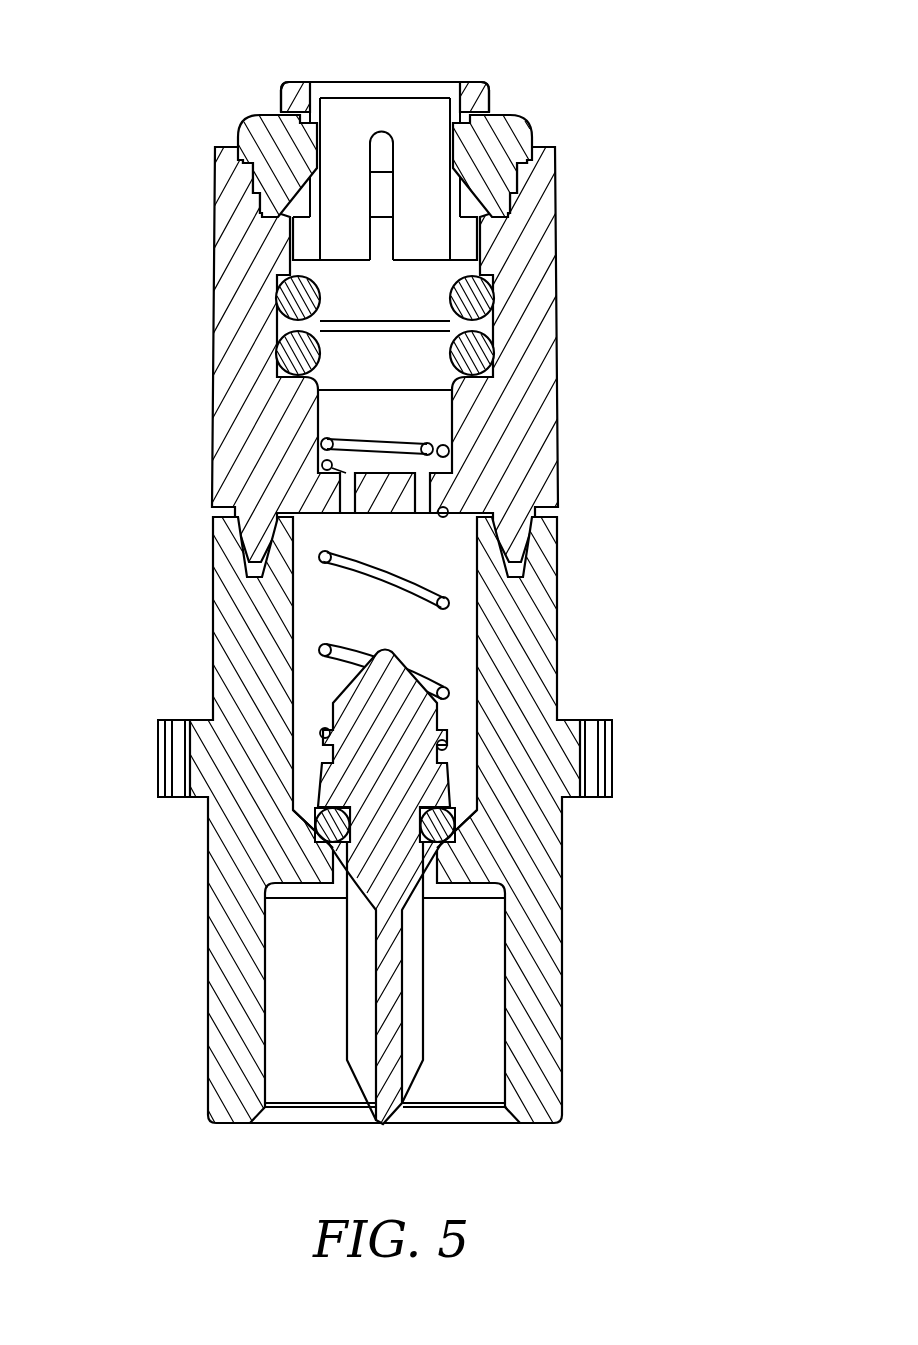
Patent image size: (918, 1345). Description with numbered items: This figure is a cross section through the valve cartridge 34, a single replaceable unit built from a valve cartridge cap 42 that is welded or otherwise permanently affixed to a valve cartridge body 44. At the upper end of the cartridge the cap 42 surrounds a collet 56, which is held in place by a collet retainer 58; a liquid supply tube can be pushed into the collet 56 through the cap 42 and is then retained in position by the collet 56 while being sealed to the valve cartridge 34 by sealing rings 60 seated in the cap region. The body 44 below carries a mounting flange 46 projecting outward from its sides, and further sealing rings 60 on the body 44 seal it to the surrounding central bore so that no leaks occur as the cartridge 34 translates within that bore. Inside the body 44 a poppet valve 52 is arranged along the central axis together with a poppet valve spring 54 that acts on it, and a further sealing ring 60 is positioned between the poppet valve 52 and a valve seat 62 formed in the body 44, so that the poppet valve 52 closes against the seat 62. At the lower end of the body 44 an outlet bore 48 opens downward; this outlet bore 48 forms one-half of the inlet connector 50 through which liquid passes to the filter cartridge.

The valve cartridge 34 is at (142, 205).
The valve cartridge cap 42 is at (548, 430).
The valve cartridge body 44 is at (540, 1057).
The mounting flange 46 is at (612, 758).
The outlet bore 48 is at (267, 1068).
The inlet connector 50 is at (522, 1156).
The poppet valve 52 is at (397, 675).
The poppet valve spring 54 is at (433, 590).
The collet 56 is at (393, 90).
The collet retainer 58 is at (520, 128).
The sealing rings 60 is at (483, 350).
The valve seat 62 is at (302, 812).